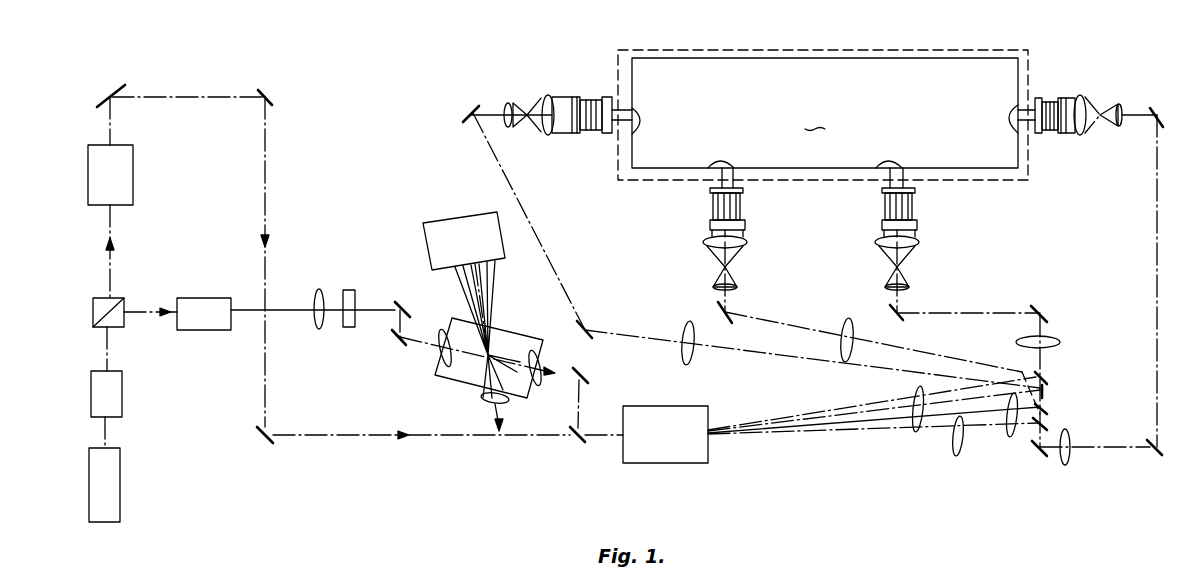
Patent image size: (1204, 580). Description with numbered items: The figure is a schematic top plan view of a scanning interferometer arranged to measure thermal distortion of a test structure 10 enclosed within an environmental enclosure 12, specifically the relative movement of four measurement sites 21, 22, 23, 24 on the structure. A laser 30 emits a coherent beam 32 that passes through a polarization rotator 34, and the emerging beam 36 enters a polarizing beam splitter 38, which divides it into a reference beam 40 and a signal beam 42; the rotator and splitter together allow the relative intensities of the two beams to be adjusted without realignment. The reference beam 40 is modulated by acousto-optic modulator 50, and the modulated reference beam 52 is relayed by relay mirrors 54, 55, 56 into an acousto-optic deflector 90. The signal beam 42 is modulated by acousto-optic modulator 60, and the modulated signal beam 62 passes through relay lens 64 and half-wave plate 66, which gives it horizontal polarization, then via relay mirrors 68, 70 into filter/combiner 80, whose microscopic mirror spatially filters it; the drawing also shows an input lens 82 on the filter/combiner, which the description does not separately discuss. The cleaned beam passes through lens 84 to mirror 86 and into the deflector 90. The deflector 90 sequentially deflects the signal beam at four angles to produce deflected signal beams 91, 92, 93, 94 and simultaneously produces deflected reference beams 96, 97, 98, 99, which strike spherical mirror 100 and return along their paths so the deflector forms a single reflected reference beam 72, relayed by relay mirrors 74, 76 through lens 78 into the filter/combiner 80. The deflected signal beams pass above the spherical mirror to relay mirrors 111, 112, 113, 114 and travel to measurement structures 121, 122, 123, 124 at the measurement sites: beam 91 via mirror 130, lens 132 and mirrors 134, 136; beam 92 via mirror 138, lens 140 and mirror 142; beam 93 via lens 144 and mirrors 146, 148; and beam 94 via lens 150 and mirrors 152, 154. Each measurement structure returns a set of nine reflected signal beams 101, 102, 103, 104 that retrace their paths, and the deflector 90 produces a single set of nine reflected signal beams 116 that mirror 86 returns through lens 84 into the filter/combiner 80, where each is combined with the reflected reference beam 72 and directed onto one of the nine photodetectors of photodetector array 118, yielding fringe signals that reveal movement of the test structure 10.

The test structure 10 is at (825, 113).
The environmental enclosure 12 is at (628, 50).
The measurement site 21 is at (1030, 132).
The measurement site 22 is at (715, 172).
The measurement site 23 is at (625, 133).
The measurement site 24 is at (888, 172).
The laser 30 is at (120, 487).
The laser beam 32 is at (110, 437).
The polarization rotator 34 is at (122, 390).
The beam 36 is at (112, 350).
The polarizing beam splitter 38 is at (93, 298).
The reference beam 40 is at (115, 253).
The signal beam 42 is at (149, 303).
The acousto-optic modulator 50 is at (133, 160).
The modulated reference beam 52 is at (110, 123).
The relay mirror 54 is at (113, 87).
The relay mirror 55 is at (270, 87).
The relay mirror 56 is at (252, 439).
The acousto-optic modulator 60 is at (213, 297).
The modulated signal beam 62 is at (288, 299).
The relay lens 64 is at (318, 329).
The half-wave plate 66 is at (349, 290).
The relay mirror 68 is at (400, 298).
The relay mirror 70 is at (390, 345).
The reflected reference beam 72 is at (577, 413).
The relay mirror 74 is at (580, 445).
The relay mirror 76 is at (585, 384).
The lens 78 is at (545, 369).
The filter/combiner 80 is at (440, 383).
The lens 82 is at (438, 342).
The lens 84 is at (483, 405).
The mirror 86 is at (500, 436).
The acousto-optic deflector 90 is at (672, 465).
The deflected signal beam 91 is at (976, 433).
The deflected signal beam 92 is at (956, 456).
The deflected signal beam 93 is at (1013, 429).
The deflected signal beam 94 is at (895, 404).
The deflected reference beam 96 is at (860, 445).
The deflected reference beam 97 is at (825, 408).
The deflected reference beam 98 is at (790, 445).
The deflected reference beam 99 is at (767, 416).
The spherical mirror 100 is at (923, 439).
The reflected signal beams 101 is at (1156, 240).
The reflected signal beams 102 is at (767, 320).
The reflected signal beams 103 is at (531, 207).
The reflected signal beams 104 is at (967, 313).
The relay mirror 111 is at (1046, 423).
The relay mirror 112 is at (1045, 409).
The relay mirror 113 is at (1045, 392).
The relay mirror 114 is at (1048, 374).
The reflected signal beams 116 is at (488, 424).
The photodetector array 118 is at (442, 224).
The measurement structure 121 is at (1077, 92).
The measurement structure 122 is at (752, 232).
The measurement structure 123 is at (548, 83).
The measurement structure 124 is at (922, 232).
The mirror 130 is at (1036, 453).
The lens 132 is at (1072, 455).
The mirror 134 is at (1154, 453).
The mirror 136 is at (1158, 114).
The mirror 138 is at (1022, 372).
The lens 140 is at (841, 345).
The mirror 142 is at (718, 312).
The lens 144 is at (680, 333).
The mirror 146 is at (590, 336).
The mirror 148 is at (467, 109).
The lens 150 is at (1015, 341).
The mirror 152 is at (1043, 311).
The mirror 154 is at (899, 316).